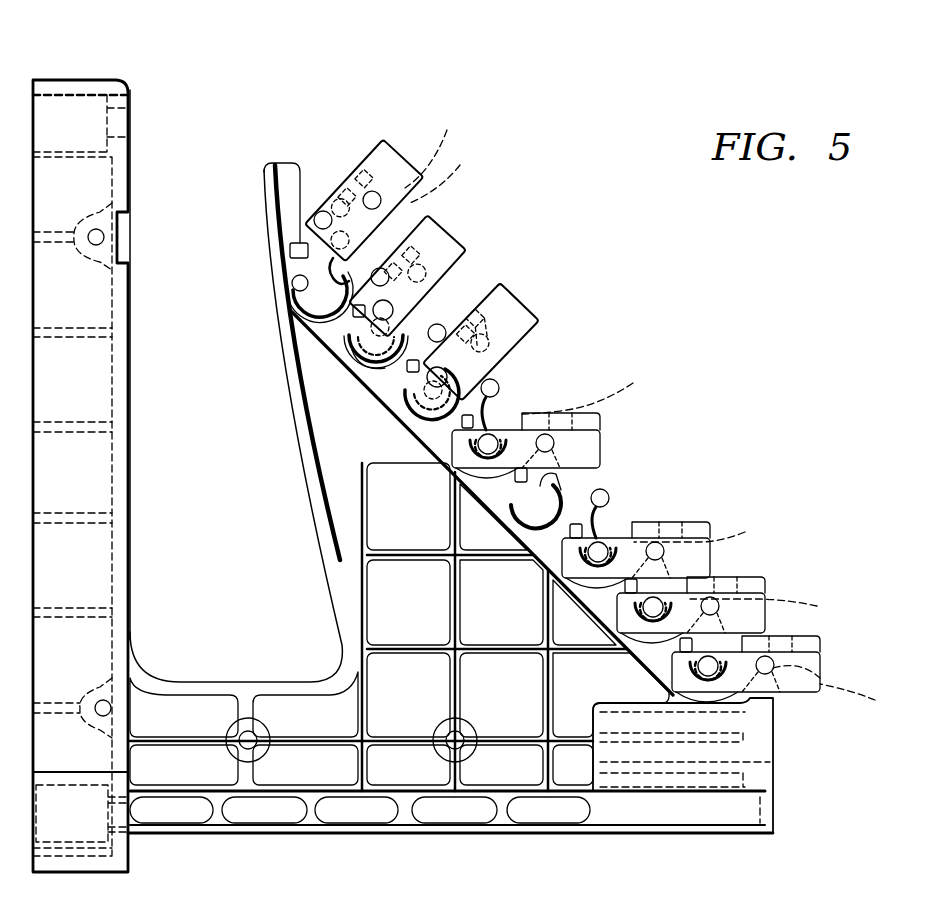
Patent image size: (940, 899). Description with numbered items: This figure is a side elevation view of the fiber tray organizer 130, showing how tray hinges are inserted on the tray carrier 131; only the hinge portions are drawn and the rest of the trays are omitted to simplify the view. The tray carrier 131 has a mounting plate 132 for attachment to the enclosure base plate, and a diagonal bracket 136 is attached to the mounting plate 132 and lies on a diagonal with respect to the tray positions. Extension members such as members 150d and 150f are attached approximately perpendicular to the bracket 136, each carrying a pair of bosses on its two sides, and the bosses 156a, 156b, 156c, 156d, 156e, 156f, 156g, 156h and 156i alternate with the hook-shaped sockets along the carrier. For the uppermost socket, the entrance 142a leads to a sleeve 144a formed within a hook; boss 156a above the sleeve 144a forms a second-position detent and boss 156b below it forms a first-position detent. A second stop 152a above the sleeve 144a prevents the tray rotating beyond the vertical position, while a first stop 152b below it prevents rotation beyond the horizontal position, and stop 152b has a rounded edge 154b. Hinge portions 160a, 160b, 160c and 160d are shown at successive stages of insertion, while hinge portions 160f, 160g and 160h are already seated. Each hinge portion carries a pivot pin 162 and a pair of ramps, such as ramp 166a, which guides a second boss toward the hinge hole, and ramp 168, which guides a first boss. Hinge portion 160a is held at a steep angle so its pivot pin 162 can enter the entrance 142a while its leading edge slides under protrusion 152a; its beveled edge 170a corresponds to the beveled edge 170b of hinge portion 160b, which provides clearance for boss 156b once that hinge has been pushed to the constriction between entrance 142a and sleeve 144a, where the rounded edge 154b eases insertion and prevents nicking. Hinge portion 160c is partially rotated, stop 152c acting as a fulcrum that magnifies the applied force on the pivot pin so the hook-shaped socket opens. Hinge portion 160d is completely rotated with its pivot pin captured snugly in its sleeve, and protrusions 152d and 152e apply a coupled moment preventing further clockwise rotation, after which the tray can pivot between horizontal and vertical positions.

The fiber tray organizer 130 is at (464, 90).
The tray carrier 131 is at (276, 536).
The mounting plate 132 is at (128, 150).
The diagonal bracket 136 is at (335, 395).
The entrance 142a is at (292, 284).
The sleeve 144a is at (312, 322).
The extension member 150d is at (500, 389).
The extension member 150f is at (610, 499).
The second stop 152a is at (290, 251).
The first stop 152b is at (352, 312).
The stop 152c is at (407, 368).
The protrusion 152d is at (462, 424).
The protrusion 152e is at (516, 478).
The rounded edge 154b is at (358, 354).
The second boss 156a is at (318, 220).
The boss 156b is at (428, 214).
The boss 156c is at (534, 318).
The boss 156d is at (504, 386).
The boss 156e is at (589, 440).
The boss 156f is at (612, 498).
The boss 156g is at (713, 523).
The boss 156h is at (777, 600).
The boss 156i is at (845, 689).
The hinge portion 160a is at (403, 150).
The hinge portion 160b is at (478, 236).
The hinge portion 160c is at (458, 300).
The hinge portion 160d is at (602, 444).
The hinge portion 160f is at (708, 538).
The hinge portion 160g is at (764, 592).
The hinge portion 160h is at (820, 658).
The pivot pin 162 is at (453, 168).
The ramp 166a is at (356, 172).
The ramp 168 is at (439, 144).
The pin 170a is at (320, 211).
The beveled edge 170b is at (432, 232).